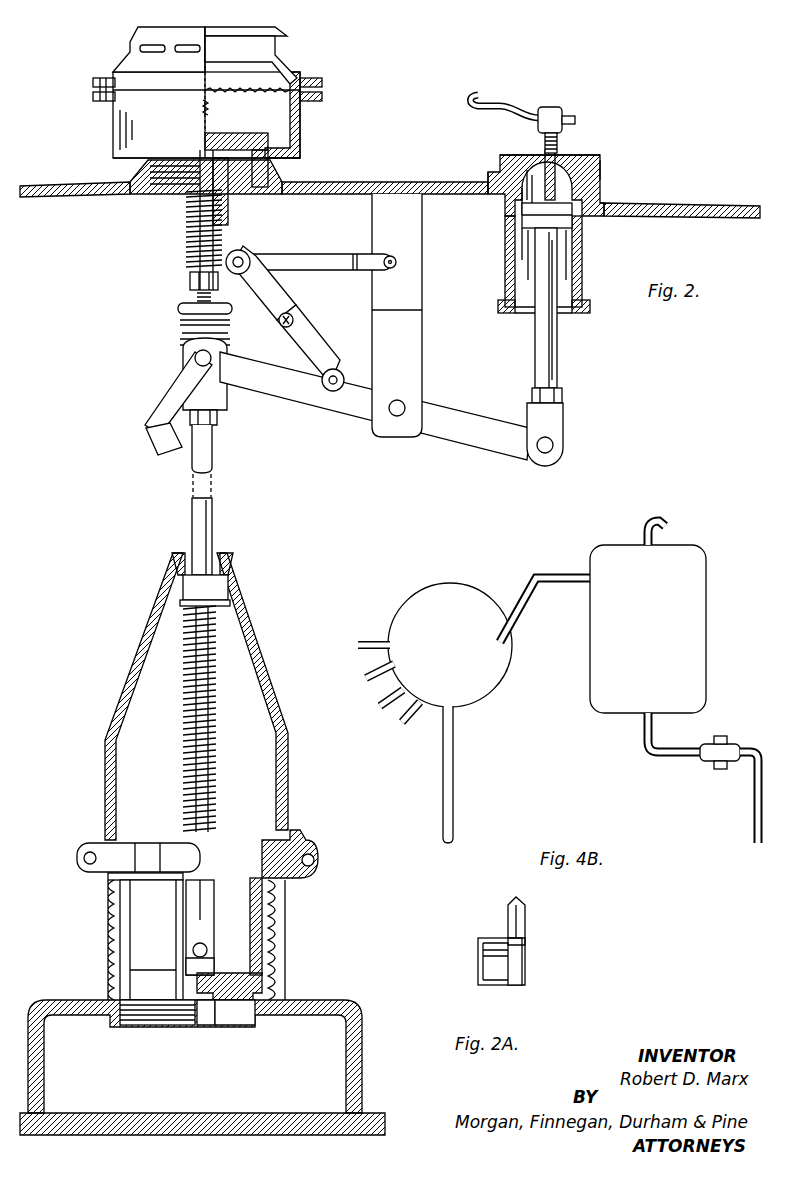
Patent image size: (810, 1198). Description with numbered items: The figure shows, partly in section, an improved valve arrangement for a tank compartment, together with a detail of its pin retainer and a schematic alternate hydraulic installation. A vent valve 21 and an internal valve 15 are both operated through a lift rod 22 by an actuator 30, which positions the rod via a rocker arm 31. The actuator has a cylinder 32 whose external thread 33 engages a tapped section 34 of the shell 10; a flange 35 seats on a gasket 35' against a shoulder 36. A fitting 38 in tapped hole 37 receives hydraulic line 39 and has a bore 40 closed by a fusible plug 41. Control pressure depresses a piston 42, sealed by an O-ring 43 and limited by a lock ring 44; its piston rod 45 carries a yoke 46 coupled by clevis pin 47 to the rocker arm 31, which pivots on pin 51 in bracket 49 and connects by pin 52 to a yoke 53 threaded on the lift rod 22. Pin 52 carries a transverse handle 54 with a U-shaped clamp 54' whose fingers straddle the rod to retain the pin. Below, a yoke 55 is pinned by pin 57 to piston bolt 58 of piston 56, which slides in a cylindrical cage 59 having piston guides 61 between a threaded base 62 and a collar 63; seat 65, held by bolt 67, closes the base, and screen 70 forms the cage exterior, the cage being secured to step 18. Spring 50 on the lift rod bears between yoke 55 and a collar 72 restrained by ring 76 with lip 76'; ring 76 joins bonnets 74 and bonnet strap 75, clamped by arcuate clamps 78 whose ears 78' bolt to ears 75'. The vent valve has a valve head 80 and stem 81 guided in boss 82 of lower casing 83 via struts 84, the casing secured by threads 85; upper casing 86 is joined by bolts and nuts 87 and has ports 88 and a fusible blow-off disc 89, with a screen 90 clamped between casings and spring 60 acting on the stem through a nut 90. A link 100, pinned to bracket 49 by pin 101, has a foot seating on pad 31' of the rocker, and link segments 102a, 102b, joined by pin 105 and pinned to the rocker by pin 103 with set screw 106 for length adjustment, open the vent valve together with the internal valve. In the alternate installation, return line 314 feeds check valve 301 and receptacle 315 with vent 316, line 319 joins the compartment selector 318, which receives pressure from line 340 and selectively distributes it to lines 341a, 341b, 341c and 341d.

In FIG. 2, the shell 10 is at (380, 182).
In FIG. 2, the internal valve 15 is at (292, 718).
In FIG. 2, the step 18 is at (360, 1078).
In FIG. 2, the vent valve 21 is at (312, 125).
In FIG. 2, the lift rod 22 is at (215, 502).
In FIG. 2, the actuator 30 is at (600, 150).
In FIG. 2, the rocker arm 31 is at (375, 416).
In FIG. 2, the pad 31' is at (177, 339).
In FIG. 2, the cylinder 32 is at (583, 260).
In FIG. 2, the external thread 33 is at (520, 196).
In FIG. 2, the tapped section 34 is at (612, 203).
In FIG. 2, the flange 35 is at (571, 143).
In FIG. 2, the gasket 35' is at (637, 161).
In FIG. 2, the shoulder 36 is at (605, 186).
In FIG. 2, the tapped hole 37 is at (543, 177).
In FIG. 2, the fitting 38 is at (540, 105).
In FIG. 2, the hydraulic line 39 is at (470, 94).
In FIG. 2, the bore 40 is at (552, 106).
In FIG. 2, the fusible plug 41 is at (577, 117).
In FIG. 2, the piston 42 is at (520, 262).
In FIG. 2, the O-ring 43 is at (522, 238).
In FIG. 2, the lock ring 44 is at (560, 312).
In FIG. 2, the piston rod 45 is at (535, 345).
In FIG. 2, the yoke 46 is at (565, 416).
In FIG. 2, the clevis pin 47 is at (555, 447).
In FIG. 2, the bracket 49 is at (372, 242).
In FIG. 2, the spring 50 is at (216, 764).
In FIG. 2, the pin 51 is at (397, 418).
In FIG. 2, the pin 52 is at (195, 358).
In FIG. 2A, the pin 52 is at (526, 965).
In FIG. 2, the yoke 53 is at (225, 395).
In FIG. 2, the transverse handle 54 is at (163, 393).
In FIG. 2A, the transverse handle 54 is at (482, 969).
In FIG. 2, the U-shaped clamp 54' is at (153, 453).
In FIG. 2A, the U-shaped clamp 54' is at (497, 919).
In FIG. 2, the yoke 55 is at (212, 925).
In FIG. 2, the piston 56 is at (140, 910).
In FIG. 2, the pin 57 is at (208, 950).
In FIG. 2, the piston bolt 58 is at (210, 970).
In FIG. 2, the cylindrical cage 59 is at (296, 962).
In FIG. 2, the spring 60 is at (190, 256).
In FIG. 2, the vertical piston guides 61 is at (125, 932).
In FIG. 2, the threaded base 62 is at (142, 1022).
In FIG. 2, the collar 63 is at (106, 880).
In FIG. 2, the seat 65 is at (235, 1025).
In FIG. 2, the bolt 67 is at (205, 1025).
In FIG. 2, the screen 70 is at (282, 986).
In FIG. 2, the collar 72 is at (228, 592).
In FIG. 2, the vertical bonnets 74 is at (136, 656).
In FIG. 2, the bonnet strap 75 is at (292, 843).
In FIG. 2, the ear 75' is at (333, 869).
In FIG. 2, the semi-circular ring 76 is at (173, 544).
In FIG. 2, the lip 76' is at (175, 558).
In FIG. 2, the arcuate clamps 78 is at (138, 840).
In FIG. 2, the ear 78' is at (75, 836).
In FIG. 2, the valve head 80 is at (245, 135).
In FIG. 2, the stem 81 is at (186, 233).
In FIG. 2, the central guide boss 82 is at (238, 185).
In FIG. 2, the lower valve casing 83 is at (300, 143).
In FIG. 2, the radial struts 84 is at (247, 177).
In FIG. 2, the threads 85 is at (152, 186).
In FIG. 2, the upper casing 86 is at (300, 68).
In FIG. 2, the bolts and nuts 87 is at (93, 90).
In FIG. 2, the ports 88 is at (192, 48).
In FIG. 2, the fusible blow-off disc 89 is at (240, 28).
In FIG. 2, the screen 90 is at (262, 90).
In FIG. 2, the link 100 is at (310, 270).
In FIG. 2, the pin 101 is at (391, 256).
In FIG. 2, the link segment 102a is at (322, 370).
In FIG. 2, the link segment 102b is at (262, 308).
In FIG. 2, the pin 103 is at (331, 392).
In FIG. 2, the pin 105 is at (246, 258).
In FIG. 2, the set screw 106 is at (294, 320).
In FIG. 4B, the check valve 301 is at (720, 744).
In FIG. 4B, the return line 314 is at (753, 800).
In FIG. 4B, the return line receptacle 315 is at (706, 640).
In FIG. 4B, the vent 316 is at (664, 522).
In FIG. 4B, the compartment selector 318 is at (450, 583).
In FIG. 4B, the line 319 is at (550, 582).
In FIG. 4B, the line 340 is at (453, 762).
In FIG. 4B, the line 341a is at (360, 642).
In FIG. 4B, the line 341b is at (366, 678).
In FIG. 4B, the line 341c is at (380, 708).
In FIG. 4B, the line 341d is at (404, 728).